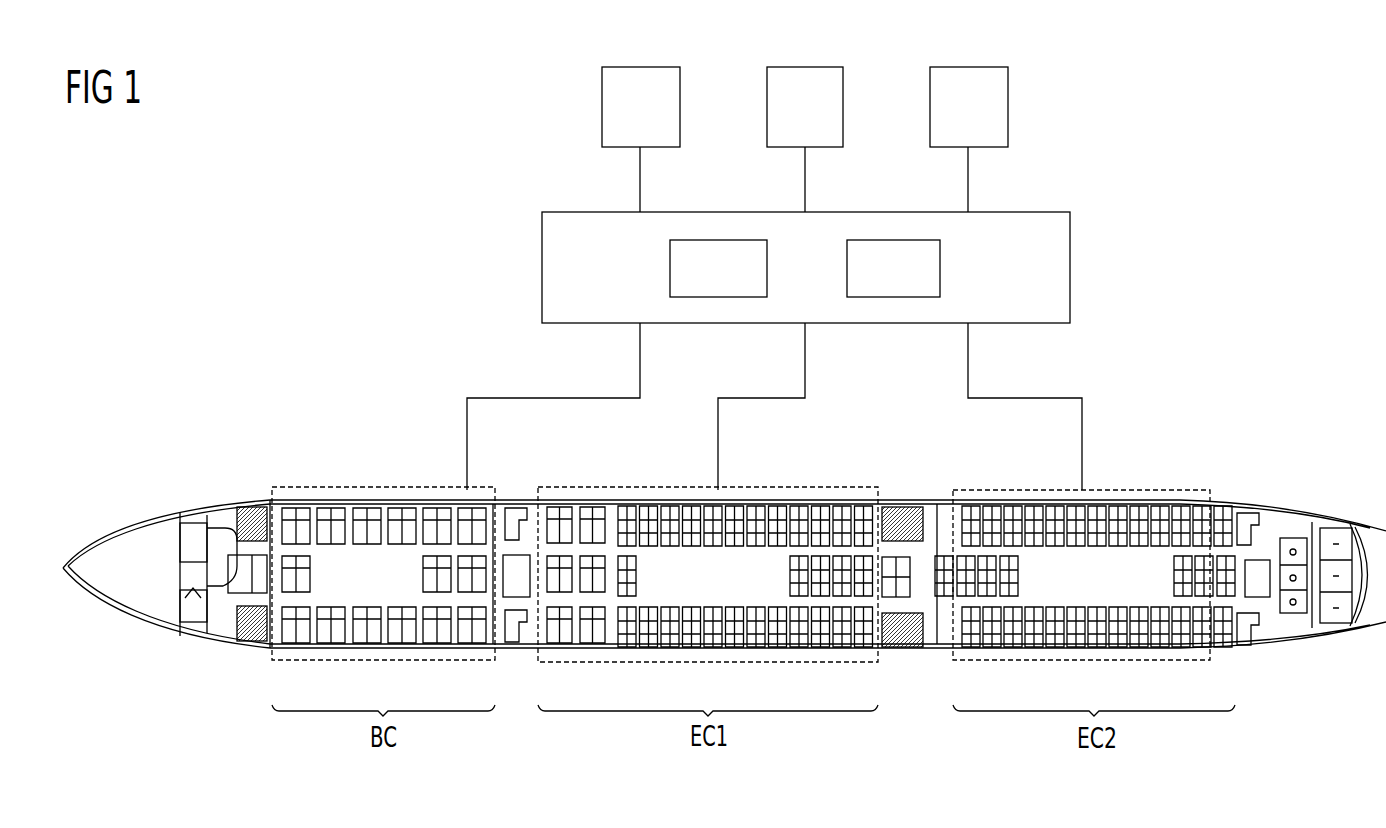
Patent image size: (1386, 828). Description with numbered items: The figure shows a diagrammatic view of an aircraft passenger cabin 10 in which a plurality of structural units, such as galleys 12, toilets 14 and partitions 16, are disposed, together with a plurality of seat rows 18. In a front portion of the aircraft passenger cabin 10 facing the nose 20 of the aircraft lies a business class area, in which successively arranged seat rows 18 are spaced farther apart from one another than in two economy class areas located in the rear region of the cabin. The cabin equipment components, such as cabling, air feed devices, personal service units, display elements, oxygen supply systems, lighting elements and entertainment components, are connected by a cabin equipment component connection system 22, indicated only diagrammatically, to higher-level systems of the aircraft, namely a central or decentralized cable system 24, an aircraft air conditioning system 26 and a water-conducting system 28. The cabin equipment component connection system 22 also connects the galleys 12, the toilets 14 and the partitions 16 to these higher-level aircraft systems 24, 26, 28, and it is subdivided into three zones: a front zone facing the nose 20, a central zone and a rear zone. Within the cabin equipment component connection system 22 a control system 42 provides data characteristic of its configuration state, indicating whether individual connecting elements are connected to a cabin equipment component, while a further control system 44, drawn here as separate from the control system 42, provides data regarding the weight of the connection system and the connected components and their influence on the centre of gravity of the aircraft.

The aircraft passenger cabin 10 is at (1300, 478).
The galley 12 is at (188, 515).
The toilet 14 is at (246, 508).
The partition 16 is at (518, 508).
The seat row 18 is at (350, 503).
The nose 20 is at (64, 566).
The cabin equipment component connection system 22 is at (796, 351).
The cable system 24 is at (680, 107).
The aircraft air conditioning system 26 is at (843, 107).
The water-conducting system 28 is at (1008, 107).
The control system 42 is at (752, 268).
The further control system 44 is at (926, 268).